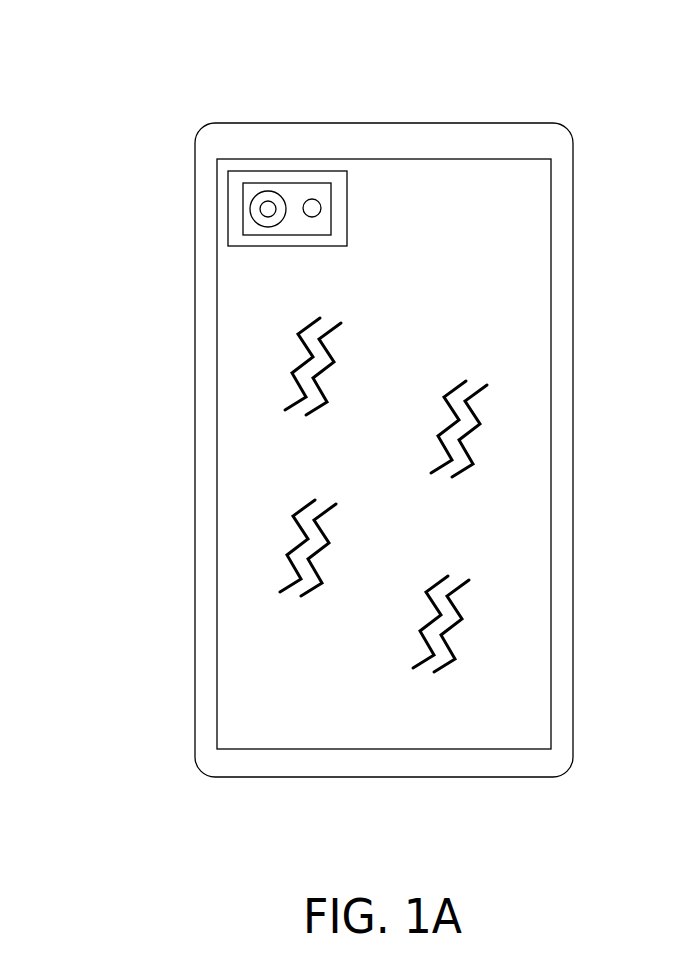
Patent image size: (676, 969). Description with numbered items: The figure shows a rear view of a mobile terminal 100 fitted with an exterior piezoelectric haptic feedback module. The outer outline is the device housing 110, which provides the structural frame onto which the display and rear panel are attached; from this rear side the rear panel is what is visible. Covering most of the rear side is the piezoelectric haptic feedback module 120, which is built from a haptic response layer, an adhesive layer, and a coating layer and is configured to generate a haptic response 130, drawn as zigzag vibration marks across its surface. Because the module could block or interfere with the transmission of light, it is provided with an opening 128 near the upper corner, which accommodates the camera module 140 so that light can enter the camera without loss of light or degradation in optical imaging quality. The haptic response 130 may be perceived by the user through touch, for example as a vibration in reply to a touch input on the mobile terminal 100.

The mobile terminal 100 is at (205, 72).
The device housing 110 is at (447, 123).
The piezoelectric haptic feedback module 120 is at (228, 287).
The opening 128 is at (235, 182).
The haptic response 130 is at (296, 517).
The camera module 140 is at (312, 187).